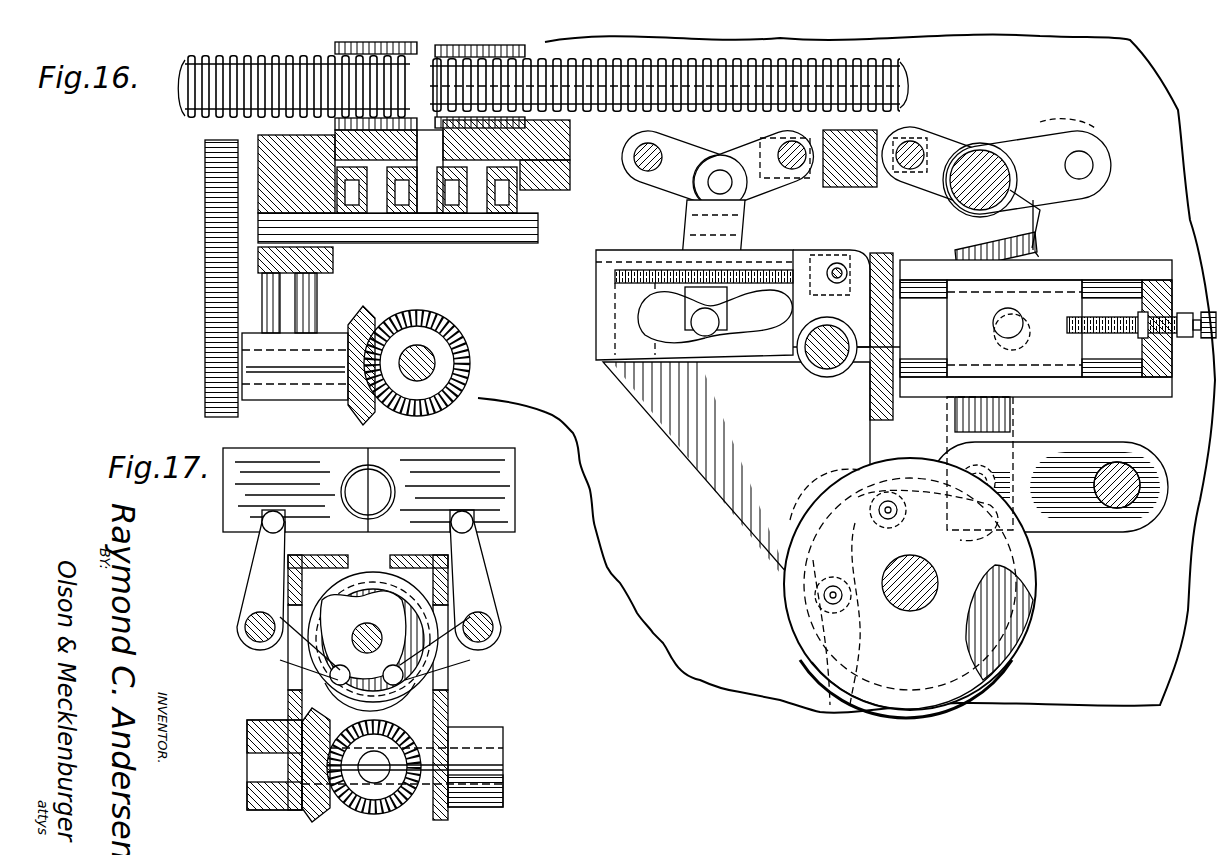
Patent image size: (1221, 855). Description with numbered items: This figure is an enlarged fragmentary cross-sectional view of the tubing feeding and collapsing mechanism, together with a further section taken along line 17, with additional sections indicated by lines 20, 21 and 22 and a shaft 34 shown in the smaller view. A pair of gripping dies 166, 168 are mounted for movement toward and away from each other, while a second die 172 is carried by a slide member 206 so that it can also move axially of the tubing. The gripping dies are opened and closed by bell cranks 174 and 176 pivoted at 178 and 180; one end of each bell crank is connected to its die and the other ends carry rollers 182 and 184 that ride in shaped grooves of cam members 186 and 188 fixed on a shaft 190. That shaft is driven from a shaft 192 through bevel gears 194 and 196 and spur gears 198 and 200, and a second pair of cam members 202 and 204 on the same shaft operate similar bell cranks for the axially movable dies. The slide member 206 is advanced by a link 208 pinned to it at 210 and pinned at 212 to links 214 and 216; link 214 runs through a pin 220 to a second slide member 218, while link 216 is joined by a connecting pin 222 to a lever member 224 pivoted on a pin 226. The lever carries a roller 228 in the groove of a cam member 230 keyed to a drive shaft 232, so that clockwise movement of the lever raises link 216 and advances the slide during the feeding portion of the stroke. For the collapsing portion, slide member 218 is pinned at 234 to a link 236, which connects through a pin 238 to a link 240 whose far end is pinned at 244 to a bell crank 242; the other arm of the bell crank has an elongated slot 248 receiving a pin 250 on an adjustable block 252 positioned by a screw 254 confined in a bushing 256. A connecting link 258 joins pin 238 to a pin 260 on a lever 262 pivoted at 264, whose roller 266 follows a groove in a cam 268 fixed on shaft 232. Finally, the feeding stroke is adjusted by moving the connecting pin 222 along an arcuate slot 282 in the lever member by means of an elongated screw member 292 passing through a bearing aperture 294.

In FIG. 16, the section line 17— 17 is at (437, 28).
In FIG. 16, the section line 20- 20 is at (978, 225).
In FIG. 16, the section line 21- 21 is at (577, 345).
In FIG. 16, the section line 22- 22 is at (842, 118).
In FIG. 17, the shaft 34 is at (395, 492).
In FIG. 17, the gripping die 166 is at (515, 512).
In FIG. 16, the gripping die 168 is at (342, 47).
In FIG. 17, the gripping die 168 is at (240, 497).
In FIG. 16, the die 172 is at (522, 49).
In FIG. 17, the bell crank 174 is at (482, 592).
In FIG. 17, the bell crank 176 is at (253, 577).
In FIG. 17, the pivot 178 is at (487, 633).
In FIG. 17, the pivot 180 is at (245, 626).
In FIG. 17, the roller 182 is at (448, 683).
In FIG. 17, the roller 184 is at (290, 684).
In FIG. 16, the cam member 186 is at (303, 323).
In FIG. 16, the cam member 188 is at (393, 298).
In FIG. 16, the shaft 190 is at (262, 236).
In FIG. 16, the shaft 192 is at (445, 352).
In FIG. 16, the bevel gear 194 is at (472, 372).
In FIG. 16, the bevel gear 196 is at (352, 405).
In FIG. 16, the spur gear 198 is at (208, 346).
In FIG. 16, the spur gear 200 is at (207, 300).
In FIG. 16, the cam member 202 is at (455, 290).
In FIG. 16, the cam member 204 is at (510, 290).
In FIG. 16, the slide member 206 is at (595, 115).
In FIG. 16, the link 208 is at (670, 167).
In FIG. 16, the pin 210 is at (650, 150).
In FIG. 16, the pin 212 is at (690, 180).
In FIG. 16, the link 214 is at (752, 200).
In FIG. 16, the link 216 is at (745, 240).
In FIG. 16, the second slide member 218 is at (850, 178).
In FIG. 16, the pin 220 is at (792, 167).
In FIG. 16, the connecting pin 222 is at (700, 333).
In FIG. 16, the lever member 224 is at (690, 462).
In FIG. 16, the pin 226 is at (830, 352).
In FIG. 16, the roller 228 is at (825, 598).
In FIG. 16, the cam member 230 is at (880, 632).
In FIG. 16, the drive shaft 232 is at (916, 605).
In FIG. 16, the pin 234 is at (913, 177).
In FIG. 16, the link 236 is at (948, 150).
In FIG. 16, the pin 238 is at (1003, 186).
In FIG. 16, the link 240 is at (1088, 142).
In FIG. 16, the bell crank 242 is at (1038, 232).
In FIG. 16, the pin 244 is at (1095, 165).
In FIG. 16, the elongated slot 248 is at (1065, 378).
In FIG. 16, the pin 250 is at (1012, 330).
In FIG. 16, the adjustably mounted block 252 is at (1052, 262).
In FIG. 16, the screw 254 is at (1125, 312).
In FIG. 16, the bushing 256 is at (1162, 300).
In FIG. 16, the connecting link 258 is at (990, 440).
In FIG. 16, the pin 260 is at (985, 482).
In FIG. 16, the lever 262 is at (1072, 530).
In FIG. 16, the pivot 264 is at (1140, 478).
In FIG. 16, the roller 266 is at (870, 502).
In FIG. 16, the cam 268 is at (866, 543).
In FIG. 16, the arcuate slot 282 is at (753, 332).
In FIG. 16, the elongated screw member 292 is at (672, 265).
In FIG. 16, the bearing aperture 294 is at (800, 258).